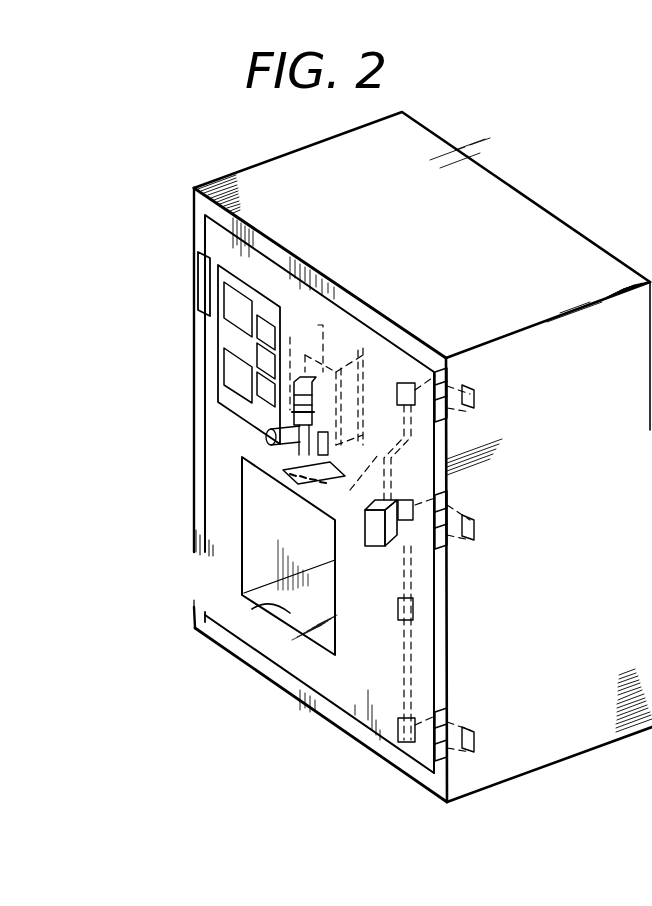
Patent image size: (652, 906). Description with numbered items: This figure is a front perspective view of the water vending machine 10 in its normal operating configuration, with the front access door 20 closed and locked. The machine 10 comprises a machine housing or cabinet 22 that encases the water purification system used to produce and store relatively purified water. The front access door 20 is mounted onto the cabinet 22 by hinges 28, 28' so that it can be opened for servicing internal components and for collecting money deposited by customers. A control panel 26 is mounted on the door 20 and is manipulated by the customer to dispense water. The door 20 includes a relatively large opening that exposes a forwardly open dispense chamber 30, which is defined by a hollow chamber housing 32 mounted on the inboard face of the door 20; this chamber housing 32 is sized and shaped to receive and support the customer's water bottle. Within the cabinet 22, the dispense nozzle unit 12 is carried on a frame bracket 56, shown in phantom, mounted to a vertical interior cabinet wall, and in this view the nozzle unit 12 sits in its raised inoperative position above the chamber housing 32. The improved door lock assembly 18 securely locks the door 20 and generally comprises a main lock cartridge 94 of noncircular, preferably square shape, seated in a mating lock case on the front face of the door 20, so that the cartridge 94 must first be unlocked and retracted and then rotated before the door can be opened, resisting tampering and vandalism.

The water vending machine 10 is at (206, 791).
The dispense nozzle unit 12 is at (236, 446).
The lock assembly 18 is at (428, 574).
The front access door 20 is at (337, 685).
The machine cabinet 22 is at (558, 726).
The control panel 26 is at (232, 333).
The hinges 28 is at (179, 271).
The lower hinge 28' is at (150, 605).
The dispense chamber 30 is at (250, 509).
The chamber housing 32 is at (228, 618).
The frame bracket 56 is at (323, 345).
The main lock cartridge 94 is at (377, 542).